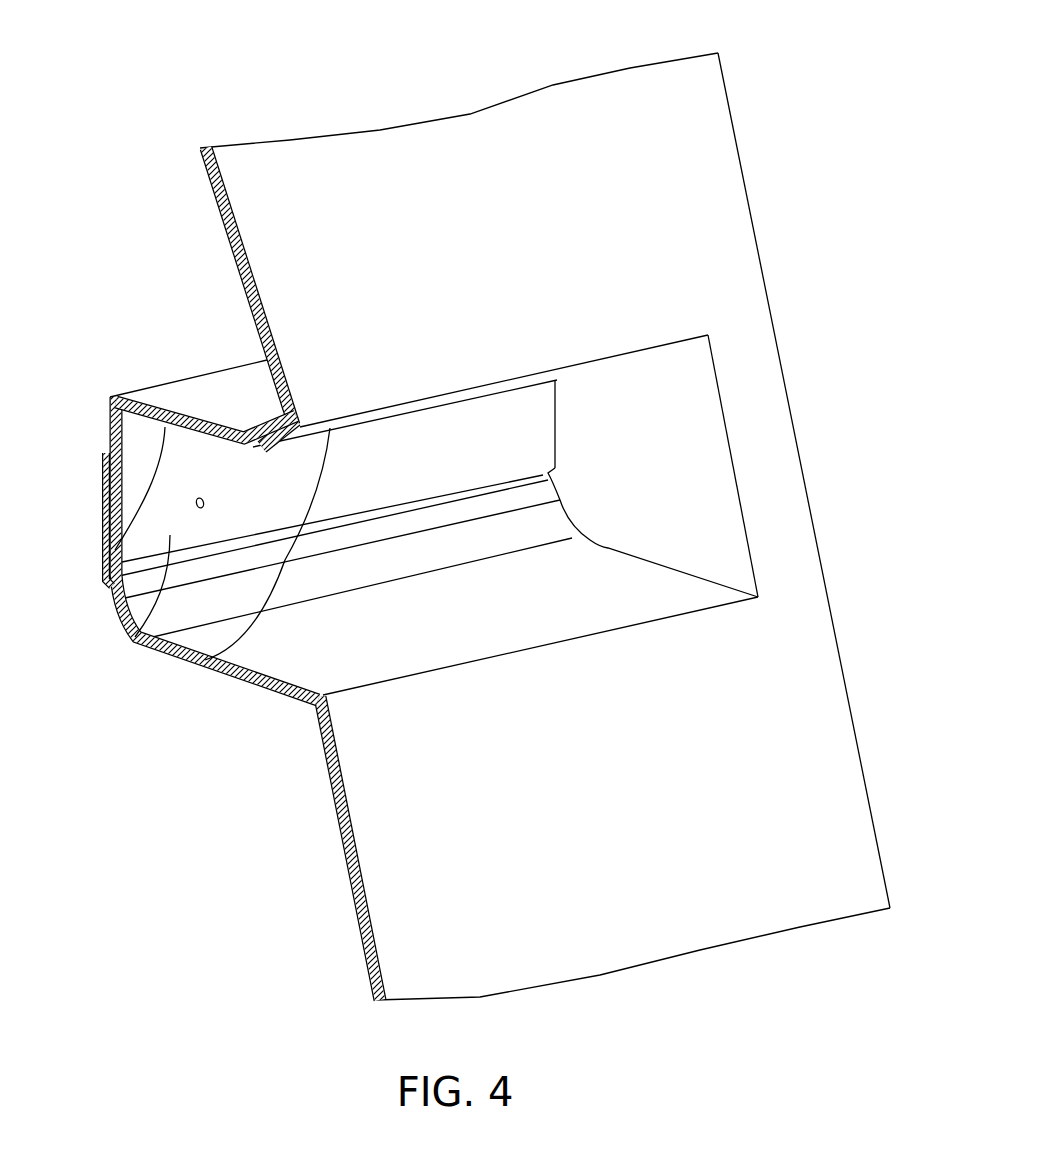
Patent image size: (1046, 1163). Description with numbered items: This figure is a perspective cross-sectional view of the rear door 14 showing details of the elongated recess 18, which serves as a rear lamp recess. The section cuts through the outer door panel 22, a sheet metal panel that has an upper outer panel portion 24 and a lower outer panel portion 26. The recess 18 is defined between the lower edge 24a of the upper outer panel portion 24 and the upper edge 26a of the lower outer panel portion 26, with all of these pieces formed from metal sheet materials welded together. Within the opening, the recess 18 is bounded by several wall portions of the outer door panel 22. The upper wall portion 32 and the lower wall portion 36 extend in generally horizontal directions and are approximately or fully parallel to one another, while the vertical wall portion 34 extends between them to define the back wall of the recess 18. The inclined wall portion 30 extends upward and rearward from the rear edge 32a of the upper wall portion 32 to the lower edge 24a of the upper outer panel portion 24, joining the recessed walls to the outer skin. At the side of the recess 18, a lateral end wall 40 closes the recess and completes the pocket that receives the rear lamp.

The rear door 14 is at (238, 56).
The elongated recess 18 is at (38, 535).
The outer door panel 22 is at (553, 82).
The upper outer panel portion 24 is at (686, 160).
The lower edge of the upper outer panel portion 24a is at (472, 388).
The lower outer panel portion 26 is at (417, 840).
The upper edge of the lower outer panel portion 26a is at (497, 654).
The inclined wall portion 30 is at (235, 648).
The upper wall portion 32 is at (110, 540).
The rear edge of the upper wall portion 32a is at (260, 448).
The vertical wall portion 34 is at (124, 619).
The lower wall portion 36 is at (320, 647).
The lateral end wall 40 is at (673, 453).